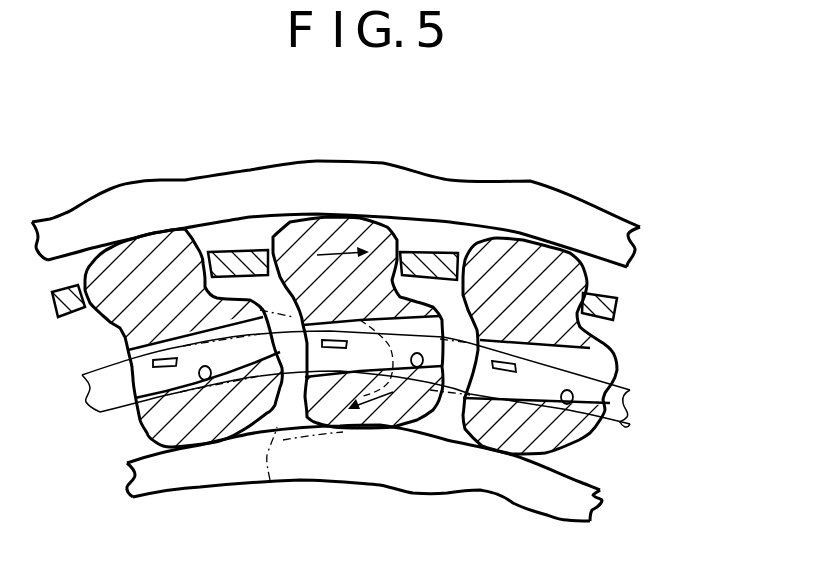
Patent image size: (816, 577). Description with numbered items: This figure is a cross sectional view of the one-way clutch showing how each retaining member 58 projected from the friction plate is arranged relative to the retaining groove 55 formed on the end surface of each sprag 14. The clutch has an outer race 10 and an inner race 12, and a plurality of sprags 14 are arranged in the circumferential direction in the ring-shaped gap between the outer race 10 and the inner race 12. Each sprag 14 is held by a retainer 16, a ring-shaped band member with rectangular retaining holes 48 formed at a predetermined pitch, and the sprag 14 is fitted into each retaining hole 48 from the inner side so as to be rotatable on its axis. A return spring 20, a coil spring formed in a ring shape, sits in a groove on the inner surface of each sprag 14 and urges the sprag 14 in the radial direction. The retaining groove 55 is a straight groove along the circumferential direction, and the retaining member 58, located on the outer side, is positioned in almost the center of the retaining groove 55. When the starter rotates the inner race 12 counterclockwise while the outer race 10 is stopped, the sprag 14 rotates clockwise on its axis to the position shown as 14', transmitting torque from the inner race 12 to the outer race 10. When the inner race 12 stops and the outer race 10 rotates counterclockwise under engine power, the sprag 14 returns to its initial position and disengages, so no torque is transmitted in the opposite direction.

The outer race 10 is at (623, 237).
The inner race 12 is at (577, 505).
The sprag 14 is at (374, 286).
The sprag in rotated position 14' is at (325, 423).
The retainer 16 is at (607, 308).
The return spring 20 is at (618, 411).
The retaining hole 48 is at (190, 235).
The retaining groove 55 is at (203, 380).
The retaining member 58 is at (163, 367).